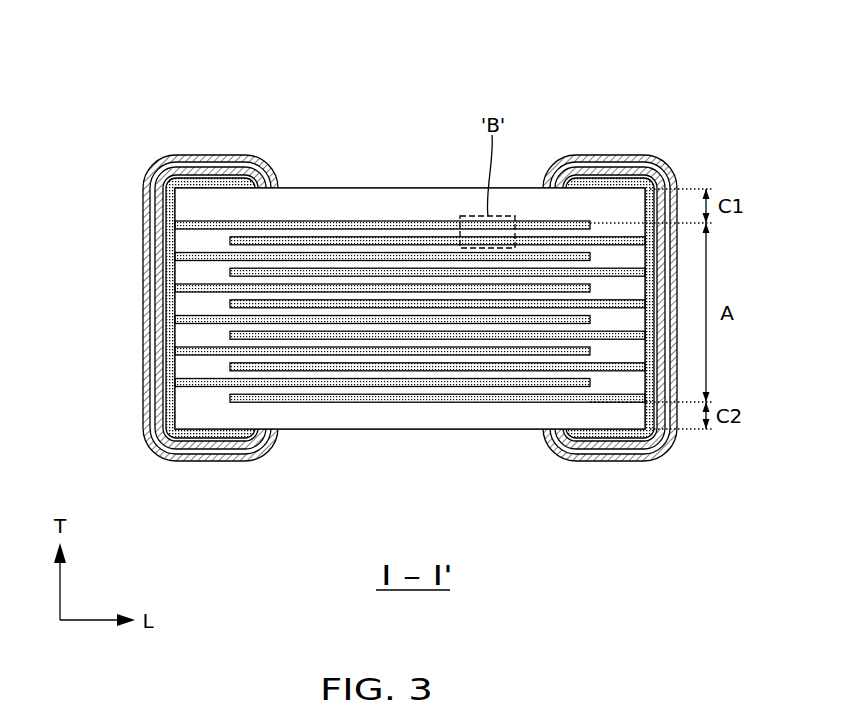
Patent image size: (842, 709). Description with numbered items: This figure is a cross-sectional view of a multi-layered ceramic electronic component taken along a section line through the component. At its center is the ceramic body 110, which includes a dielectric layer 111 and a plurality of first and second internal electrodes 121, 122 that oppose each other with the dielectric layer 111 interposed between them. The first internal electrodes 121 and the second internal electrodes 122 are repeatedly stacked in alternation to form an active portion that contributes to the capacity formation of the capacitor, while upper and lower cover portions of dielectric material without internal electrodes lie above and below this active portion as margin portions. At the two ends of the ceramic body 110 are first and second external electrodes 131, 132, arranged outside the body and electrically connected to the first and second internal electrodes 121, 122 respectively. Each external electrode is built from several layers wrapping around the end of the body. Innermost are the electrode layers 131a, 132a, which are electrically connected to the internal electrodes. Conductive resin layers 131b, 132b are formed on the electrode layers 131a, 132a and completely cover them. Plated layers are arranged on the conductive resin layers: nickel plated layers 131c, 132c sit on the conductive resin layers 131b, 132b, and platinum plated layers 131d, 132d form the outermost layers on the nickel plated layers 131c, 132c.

The ceramic body 110 is at (385, 188).
The dielectric layer 111 is at (190, 245).
The first internal electrode 121 is at (298, 221).
The second internal electrode 122 is at (246, 241).
The first external electrode 131 is at (175, 247).
The electrode layer 131a is at (227, 258).
The conductive resin layer 131b is at (215, 172).
The nickel plated layer 131c is at (176, 166).
The platinum plated layer 131d is at (148, 164).
The second external electrode 132 is at (653, 247).
The electrode layer 132a is at (595, 258).
The conductive resin layer 132b is at (601, 173).
The nickel plated layer 132c is at (637, 168).
The platinum plated layer 132d is at (672, 173).